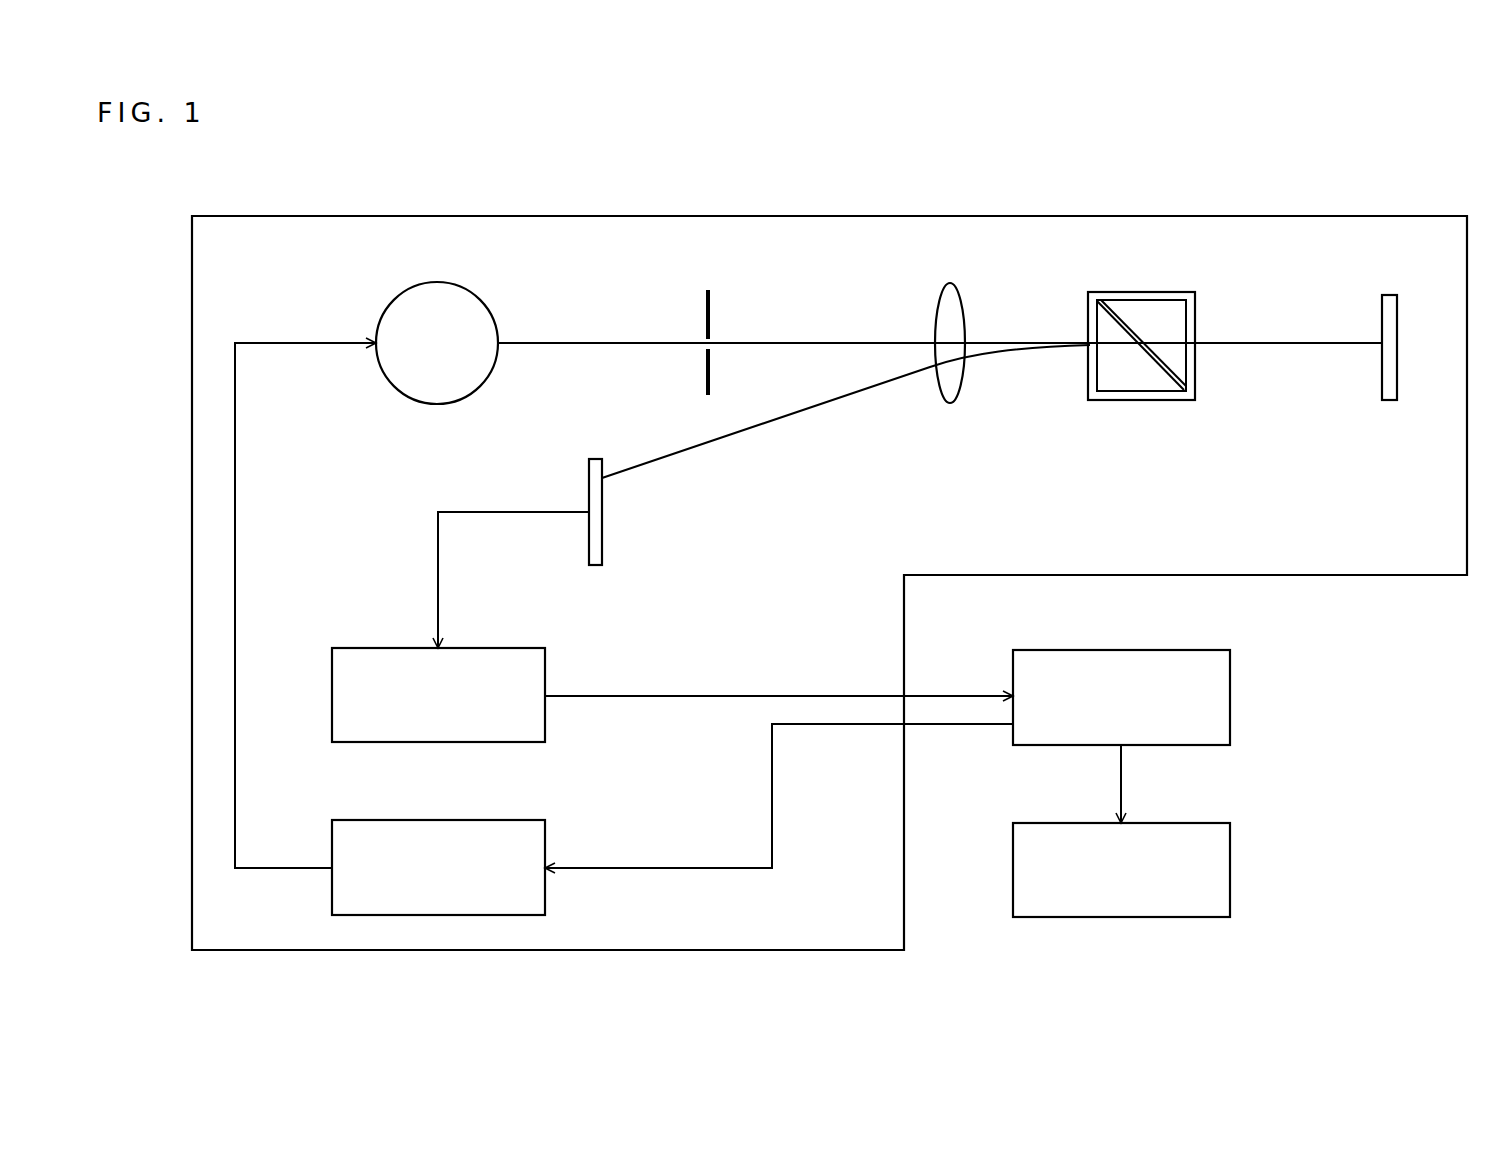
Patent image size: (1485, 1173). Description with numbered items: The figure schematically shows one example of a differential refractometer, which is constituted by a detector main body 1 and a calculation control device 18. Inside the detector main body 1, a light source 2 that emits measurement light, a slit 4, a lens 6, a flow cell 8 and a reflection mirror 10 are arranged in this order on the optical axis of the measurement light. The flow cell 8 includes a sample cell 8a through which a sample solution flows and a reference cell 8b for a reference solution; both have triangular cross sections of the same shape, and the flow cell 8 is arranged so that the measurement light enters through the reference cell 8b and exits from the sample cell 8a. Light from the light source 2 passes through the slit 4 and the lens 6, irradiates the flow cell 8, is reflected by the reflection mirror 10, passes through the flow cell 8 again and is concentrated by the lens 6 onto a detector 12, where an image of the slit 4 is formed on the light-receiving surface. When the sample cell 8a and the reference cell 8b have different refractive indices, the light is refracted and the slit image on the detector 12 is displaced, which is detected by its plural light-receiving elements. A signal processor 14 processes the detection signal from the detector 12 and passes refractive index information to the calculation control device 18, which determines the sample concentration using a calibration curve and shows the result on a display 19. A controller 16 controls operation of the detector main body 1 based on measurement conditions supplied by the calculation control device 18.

The detector main body 1 is at (1333, 216).
The light source 2 is at (437, 281).
The slit 4 is at (710, 300).
The lens 6 is at (950, 283).
The flow cell 8 is at (1152, 348).
The sample cell 8a is at (1135, 313).
The reference cell 8b is at (1135, 370).
The reflection mirror 10 is at (1390, 292).
The detector 12 is at (605, 525).
The signal processor 14 is at (502, 648).
The controller 16 is at (502, 820).
The calculation control device 18 is at (1190, 650).
The display 19 is at (1190, 823).